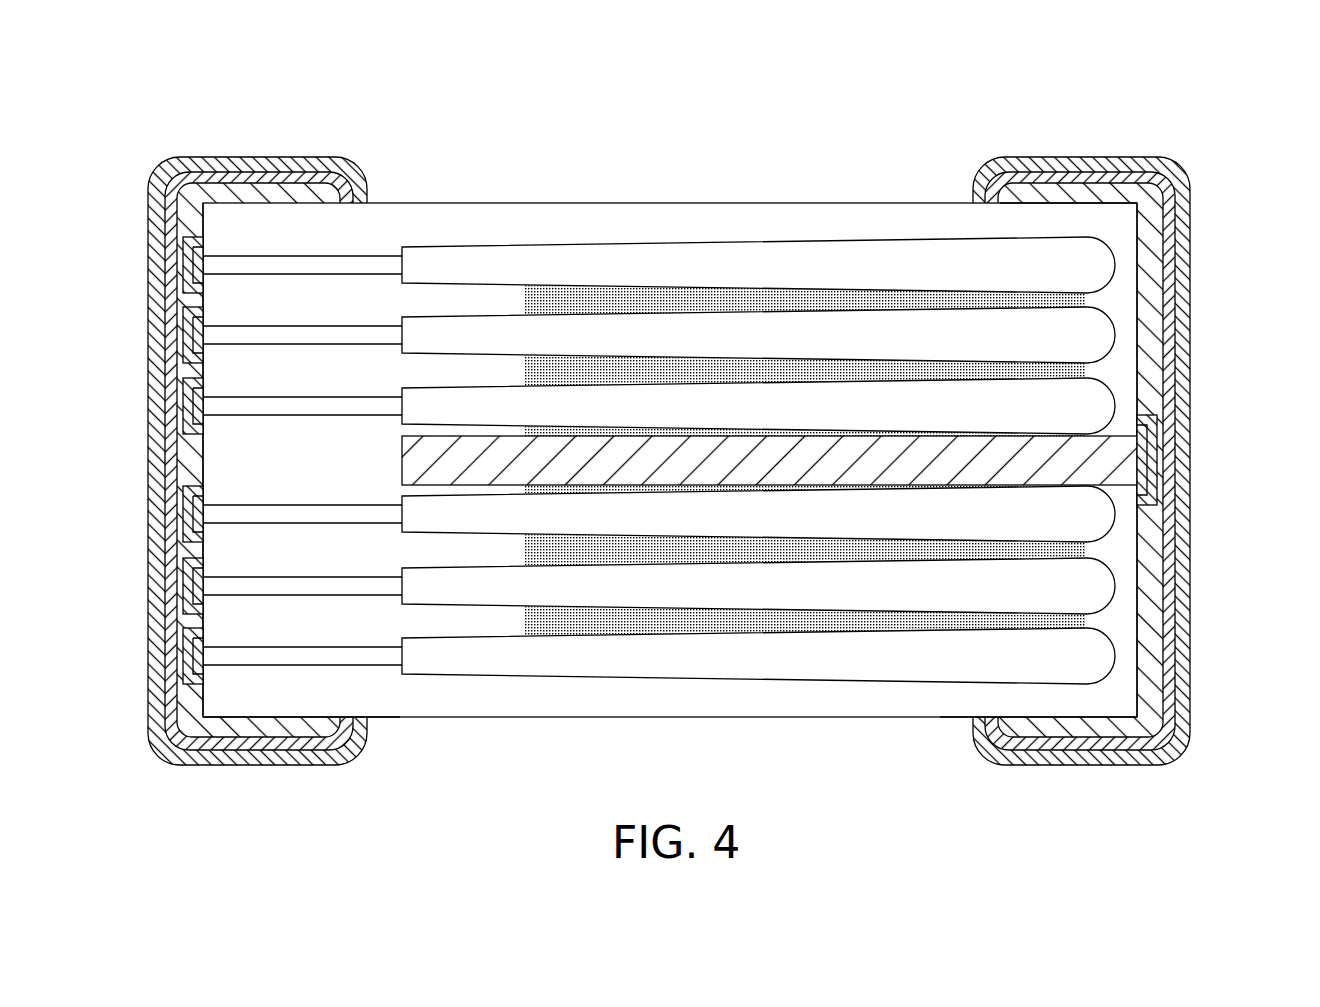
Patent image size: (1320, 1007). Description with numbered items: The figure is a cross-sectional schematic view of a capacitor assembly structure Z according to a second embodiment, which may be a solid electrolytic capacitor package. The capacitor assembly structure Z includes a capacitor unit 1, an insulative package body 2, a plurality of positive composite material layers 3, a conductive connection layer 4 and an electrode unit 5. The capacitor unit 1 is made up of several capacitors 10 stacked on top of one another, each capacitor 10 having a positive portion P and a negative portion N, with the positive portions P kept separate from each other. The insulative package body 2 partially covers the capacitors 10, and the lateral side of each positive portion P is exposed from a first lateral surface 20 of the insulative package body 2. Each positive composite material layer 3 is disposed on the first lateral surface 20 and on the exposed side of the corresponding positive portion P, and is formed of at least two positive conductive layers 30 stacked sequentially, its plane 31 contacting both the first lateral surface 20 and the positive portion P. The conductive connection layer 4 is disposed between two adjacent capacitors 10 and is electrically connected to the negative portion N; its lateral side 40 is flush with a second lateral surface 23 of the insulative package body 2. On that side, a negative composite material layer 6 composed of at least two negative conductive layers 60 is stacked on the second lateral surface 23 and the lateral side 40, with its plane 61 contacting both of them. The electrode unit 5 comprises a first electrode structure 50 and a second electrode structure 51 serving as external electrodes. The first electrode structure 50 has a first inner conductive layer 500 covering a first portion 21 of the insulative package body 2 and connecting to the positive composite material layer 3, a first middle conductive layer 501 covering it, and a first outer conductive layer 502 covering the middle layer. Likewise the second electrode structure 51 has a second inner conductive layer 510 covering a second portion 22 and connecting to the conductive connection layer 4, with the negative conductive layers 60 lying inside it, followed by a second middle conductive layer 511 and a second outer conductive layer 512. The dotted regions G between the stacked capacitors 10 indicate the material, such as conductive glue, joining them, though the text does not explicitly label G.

The capacitor unit 1 is at (758, 461).
The capacitor 10 is at (868, 262).
The insulative package body 2 is at (607, 203).
The first lateral surface 20 is at (200, 212).
The first portion 21 is at (258, 700).
The second portion 22 is at (1072, 700).
The second lateral surface 23 is at (1140, 237).
The positive composite material layer 3 is at (182, 270).
The positive conductive layer 30 is at (190, 330).
The plane 31 is at (199, 344).
The conductive connection layer 4 is at (400, 460).
The lateral side 40 is at (1145, 491).
The electrode unit 5 is at (168, 37).
The first electrode structure 50 is at (72, 750).
The first inner conductive layer 500 is at (155, 735).
The first middle conductive layer 501 is at (172, 697).
The first outer conductive layer 502 is at (160, 650).
The second electrode structure 51 is at (1270, 750).
The second inner conductive layer 510 is at (1182, 738).
The second middle conductive layer 511 is at (1172, 697).
The second outer conductive layer 512 is at (1182, 652).
The negative composite material layer 6 is at (1149, 412).
The negative conductive layer 60 is at (1158, 432).
The plane 61 is at (1120, 503).
The gap filler G is at (570, 636).
The positive portion P is at (296, 254).
The negative portion N is at (1065, 229).
The capacitor assembly structure Z is at (1191, 66).